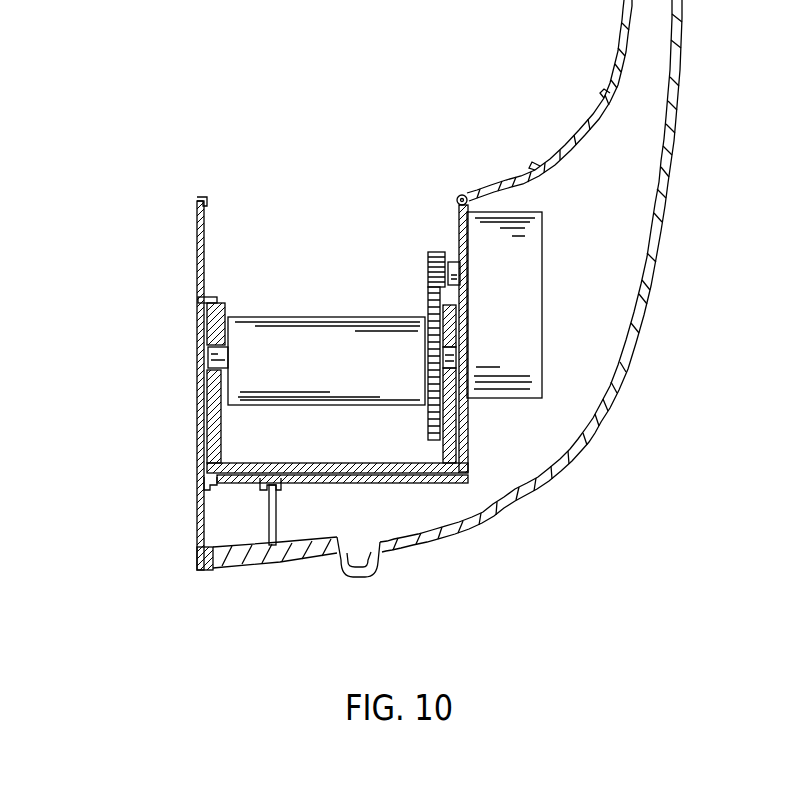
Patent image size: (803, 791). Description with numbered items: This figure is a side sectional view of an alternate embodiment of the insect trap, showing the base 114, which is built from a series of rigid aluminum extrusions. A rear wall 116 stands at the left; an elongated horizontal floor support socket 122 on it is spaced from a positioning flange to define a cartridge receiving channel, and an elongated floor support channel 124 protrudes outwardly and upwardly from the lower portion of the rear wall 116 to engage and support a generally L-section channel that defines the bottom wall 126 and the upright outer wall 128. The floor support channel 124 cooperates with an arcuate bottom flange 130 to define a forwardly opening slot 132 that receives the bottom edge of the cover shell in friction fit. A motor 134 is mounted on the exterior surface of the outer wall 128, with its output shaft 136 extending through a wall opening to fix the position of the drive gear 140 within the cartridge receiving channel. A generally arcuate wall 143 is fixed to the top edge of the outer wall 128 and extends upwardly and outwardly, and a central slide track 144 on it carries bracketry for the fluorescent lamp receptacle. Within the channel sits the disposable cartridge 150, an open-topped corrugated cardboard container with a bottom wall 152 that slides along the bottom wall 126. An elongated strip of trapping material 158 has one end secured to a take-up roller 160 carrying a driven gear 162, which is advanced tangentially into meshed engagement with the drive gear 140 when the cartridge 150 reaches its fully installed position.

The base 114 is at (197, 233).
The rear wall 116 is at (197, 259).
The floor support socket 122 is at (203, 482).
The floor support channel 124 is at (278, 513).
The bottom wall 126 is at (420, 483).
The outer wall 128 is at (472, 433).
The arcuate bottom flange 130 is at (275, 562).
The forwardly opening slot 132 is at (222, 570).
The motor 134 is at (544, 312).
The output shaft 136 is at (458, 268).
The drive gear 140 is at (428, 254).
The arcuate wall 143 is at (578, 126).
The slide track 144 is at (546, 160).
The disposable cartridge 150 is at (226, 300).
The bottom wall 152 is at (237, 463).
The trapping material 158 is at (283, 316).
The take-up roller 160 is at (450, 362).
The driven gear 162 is at (428, 304).